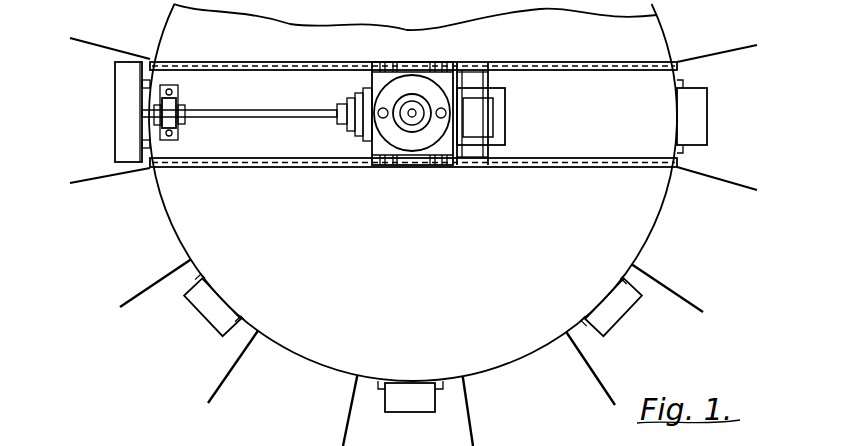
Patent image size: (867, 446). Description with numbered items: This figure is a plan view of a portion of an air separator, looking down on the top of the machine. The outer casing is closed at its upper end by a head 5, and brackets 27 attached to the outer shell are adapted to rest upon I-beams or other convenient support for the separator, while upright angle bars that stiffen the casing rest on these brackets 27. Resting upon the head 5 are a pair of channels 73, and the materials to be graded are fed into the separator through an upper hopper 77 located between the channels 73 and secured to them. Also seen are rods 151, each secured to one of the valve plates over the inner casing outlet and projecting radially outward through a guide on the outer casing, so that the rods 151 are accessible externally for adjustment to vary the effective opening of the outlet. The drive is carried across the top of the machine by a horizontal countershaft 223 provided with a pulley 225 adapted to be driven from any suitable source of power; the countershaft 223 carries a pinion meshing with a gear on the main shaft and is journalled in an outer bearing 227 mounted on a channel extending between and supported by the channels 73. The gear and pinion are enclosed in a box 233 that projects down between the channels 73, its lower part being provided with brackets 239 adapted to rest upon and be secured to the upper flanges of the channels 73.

The head 5 is at (182, 212).
The brackets 27 is at (208, 318).
The channels 73 is at (283, 70).
The upper hopper 77 is at (500, 118).
The rod 151 is at (224, 383).
The horizontal countershaft 223 is at (216, 116).
The pulley 225 is at (125, 96).
The outer bearing 227 is at (176, 122).
The box 233 is at (444, 147).
The brackets 239 is at (407, 63).